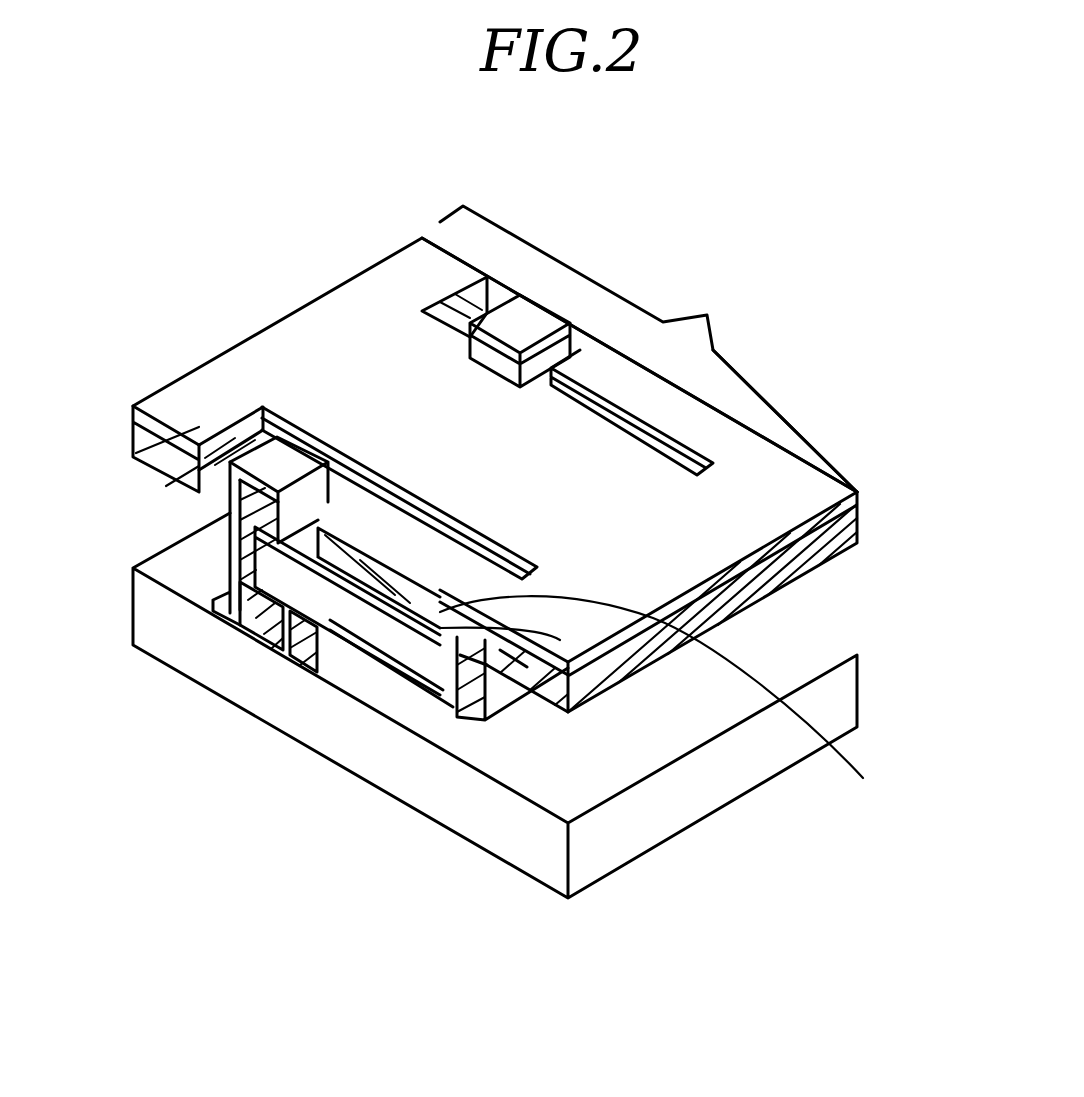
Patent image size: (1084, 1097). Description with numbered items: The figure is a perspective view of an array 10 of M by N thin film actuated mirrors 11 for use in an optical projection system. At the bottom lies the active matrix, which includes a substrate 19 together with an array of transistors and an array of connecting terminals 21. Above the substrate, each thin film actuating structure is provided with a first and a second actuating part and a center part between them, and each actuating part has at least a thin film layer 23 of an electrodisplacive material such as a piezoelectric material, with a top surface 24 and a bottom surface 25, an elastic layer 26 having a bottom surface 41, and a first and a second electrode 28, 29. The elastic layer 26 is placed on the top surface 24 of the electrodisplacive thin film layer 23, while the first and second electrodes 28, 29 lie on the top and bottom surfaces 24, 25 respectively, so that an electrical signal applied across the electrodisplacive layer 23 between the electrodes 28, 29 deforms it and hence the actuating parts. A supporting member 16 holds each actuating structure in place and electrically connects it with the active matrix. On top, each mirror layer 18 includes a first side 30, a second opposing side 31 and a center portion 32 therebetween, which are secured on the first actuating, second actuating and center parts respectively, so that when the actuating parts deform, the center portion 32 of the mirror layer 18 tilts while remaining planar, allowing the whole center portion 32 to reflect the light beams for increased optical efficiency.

The array of thin film actuated mirrors 10 is at (274, 268).
The thin film actuated mirror 11 is at (648, 349).
The supporting member 16 is at (230, 612).
The mirror layer 18 is at (820, 547).
The substrate 19 is at (760, 757).
The connecting terminal 21 is at (290, 642).
The thin film layer of electrodisplacive material 23 is at (394, 637).
The top surface 24 is at (560, 640).
The bottom surface 25 is at (350, 637).
The elastic layer 26 is at (527, 667).
The first electrode 28 is at (385, 648).
The second electrode 29 is at (487, 662).
The first side 30 is at (385, 530).
The second opposing side 31 is at (652, 402).
The center portion 32 is at (460, 447).
The bottom surface 41 is at (665, 707).